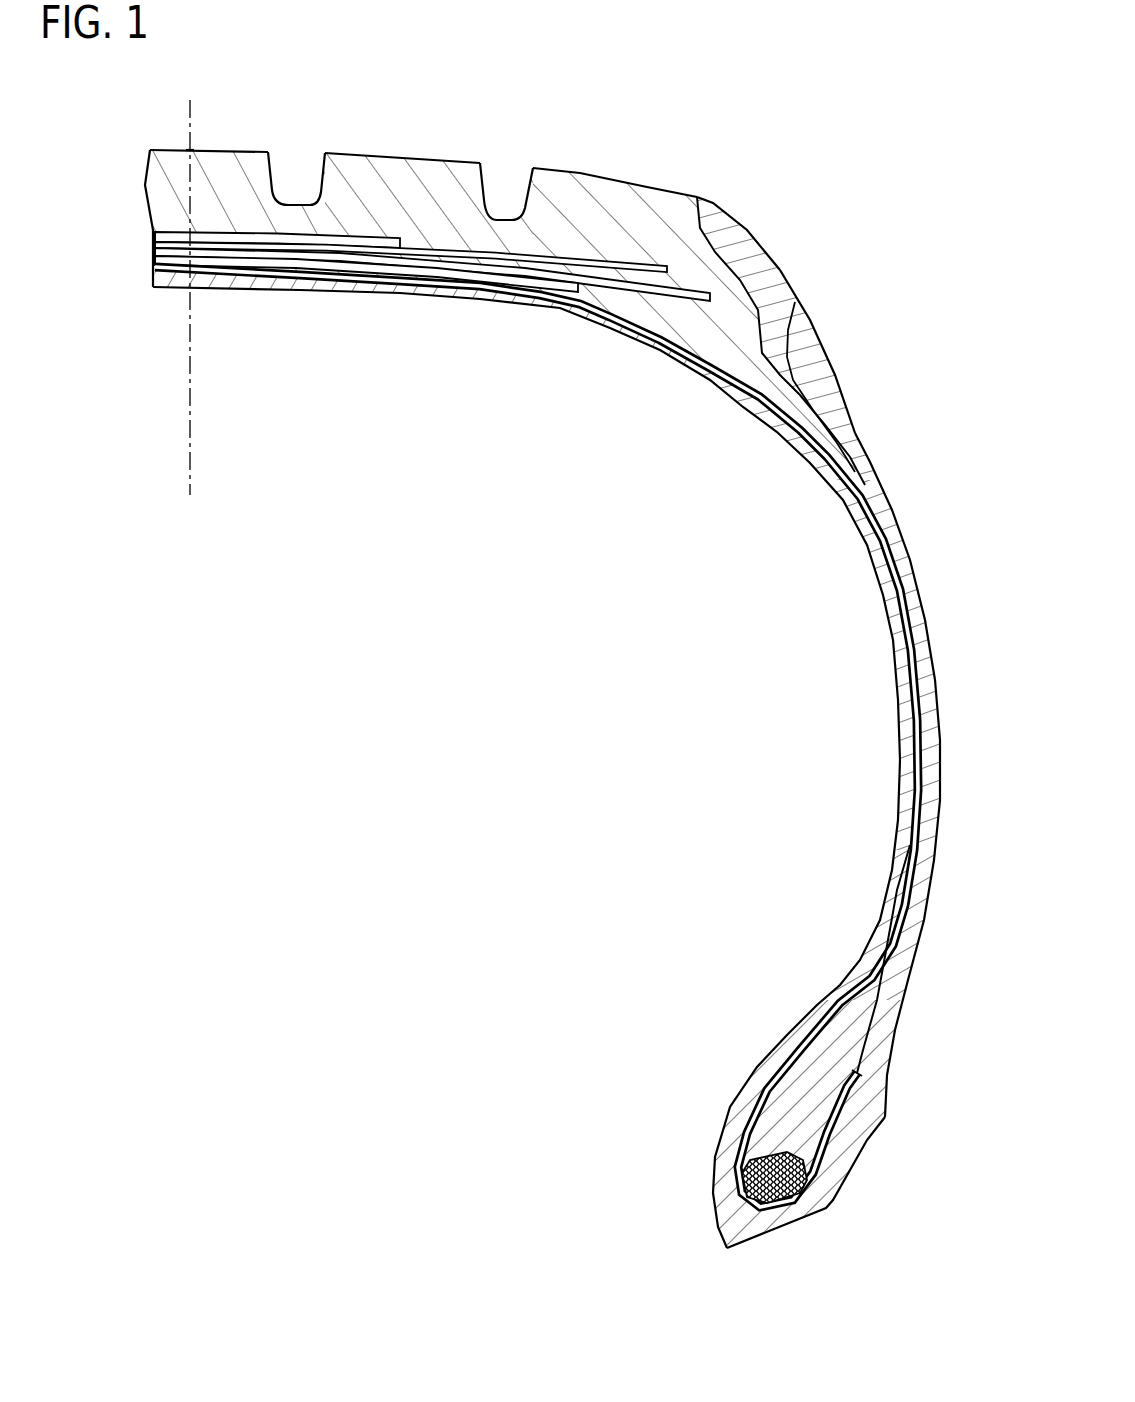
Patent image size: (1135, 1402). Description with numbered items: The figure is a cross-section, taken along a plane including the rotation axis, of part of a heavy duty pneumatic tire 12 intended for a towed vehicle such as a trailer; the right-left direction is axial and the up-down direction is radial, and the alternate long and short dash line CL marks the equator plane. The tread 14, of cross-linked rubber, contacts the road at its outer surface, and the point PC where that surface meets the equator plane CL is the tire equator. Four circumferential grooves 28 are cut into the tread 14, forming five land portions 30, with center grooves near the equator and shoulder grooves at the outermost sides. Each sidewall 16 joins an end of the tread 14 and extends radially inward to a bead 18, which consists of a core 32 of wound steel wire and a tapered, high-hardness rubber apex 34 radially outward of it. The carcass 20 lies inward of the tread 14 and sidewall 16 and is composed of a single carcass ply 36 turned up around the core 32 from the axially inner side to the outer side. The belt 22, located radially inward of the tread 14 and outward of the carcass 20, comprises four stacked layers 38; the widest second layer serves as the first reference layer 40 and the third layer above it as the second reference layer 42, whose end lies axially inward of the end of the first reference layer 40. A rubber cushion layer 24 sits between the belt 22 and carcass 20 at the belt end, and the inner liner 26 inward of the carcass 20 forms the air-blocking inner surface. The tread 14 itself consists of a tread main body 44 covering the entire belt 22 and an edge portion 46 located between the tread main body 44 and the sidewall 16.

The heavy duty pneumatic tire 12 is at (838, 150).
The tread 14 is at (436, 147).
The sidewall 16 is at (942, 619).
The bead 18 is at (729, 1046).
The carcass 20 is at (376, 296).
The belt 22 is at (164, 216).
The cushion layer 24 is at (690, 323).
The inner liner 26 is at (422, 309).
The circumferential groove 28 is at (488, 186).
The land portion 30 is at (582, 170).
The core 32 is at (742, 1177).
The apex 34 is at (783, 1110).
The carcass ply 36 is at (376, 289).
The layer 38 is at (376, 289).
The first reference layer 40 is at (217, 253).
The second reference layer 42 is at (180, 243).
The tread main body 44 is at (637, 205).
The edge portion 46 is at (765, 257).
The equator plane CL is at (193, 455).
The point of intersection PC is at (190, 150).